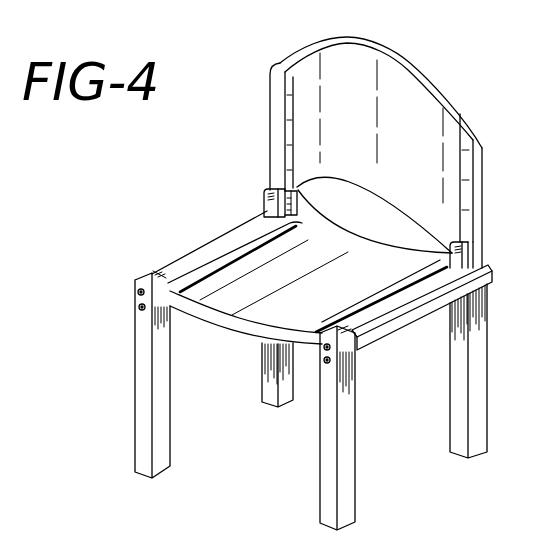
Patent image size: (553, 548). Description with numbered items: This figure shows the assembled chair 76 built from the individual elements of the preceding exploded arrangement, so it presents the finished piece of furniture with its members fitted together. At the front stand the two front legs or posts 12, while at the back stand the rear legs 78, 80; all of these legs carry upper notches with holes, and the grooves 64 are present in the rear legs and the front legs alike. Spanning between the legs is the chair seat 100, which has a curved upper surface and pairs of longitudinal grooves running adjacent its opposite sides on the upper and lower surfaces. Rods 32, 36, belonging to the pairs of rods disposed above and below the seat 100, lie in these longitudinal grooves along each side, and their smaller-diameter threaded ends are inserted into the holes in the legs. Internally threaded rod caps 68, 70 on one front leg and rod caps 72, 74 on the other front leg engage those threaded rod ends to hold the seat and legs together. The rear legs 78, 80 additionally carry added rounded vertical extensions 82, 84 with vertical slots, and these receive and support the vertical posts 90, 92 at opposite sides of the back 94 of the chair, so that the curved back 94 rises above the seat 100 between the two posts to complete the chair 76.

The front leg 12 is at (168, 418).
The rod 32 is at (411, 290).
The rod 36 is at (227, 233).
The groove 64 is at (264, 201).
The rod cap 68 is at (331, 349).
The rod cap 70 is at (331, 361).
The rod cap 72 is at (139, 294).
The rod cap 74 is at (140, 309).
The chair 76 is at (471, 95).
The rear leg 78 is at (496, 330).
The rear leg 80 is at (263, 358).
The rounded vertical extension 82 is at (452, 247).
The rounded vertical extension 84 is at (297, 195).
The vertical post 90 is at (483, 175).
The vertical post 92 is at (269, 108).
The back 94 is at (398, 57).
The chair seat 100 is at (333, 229).